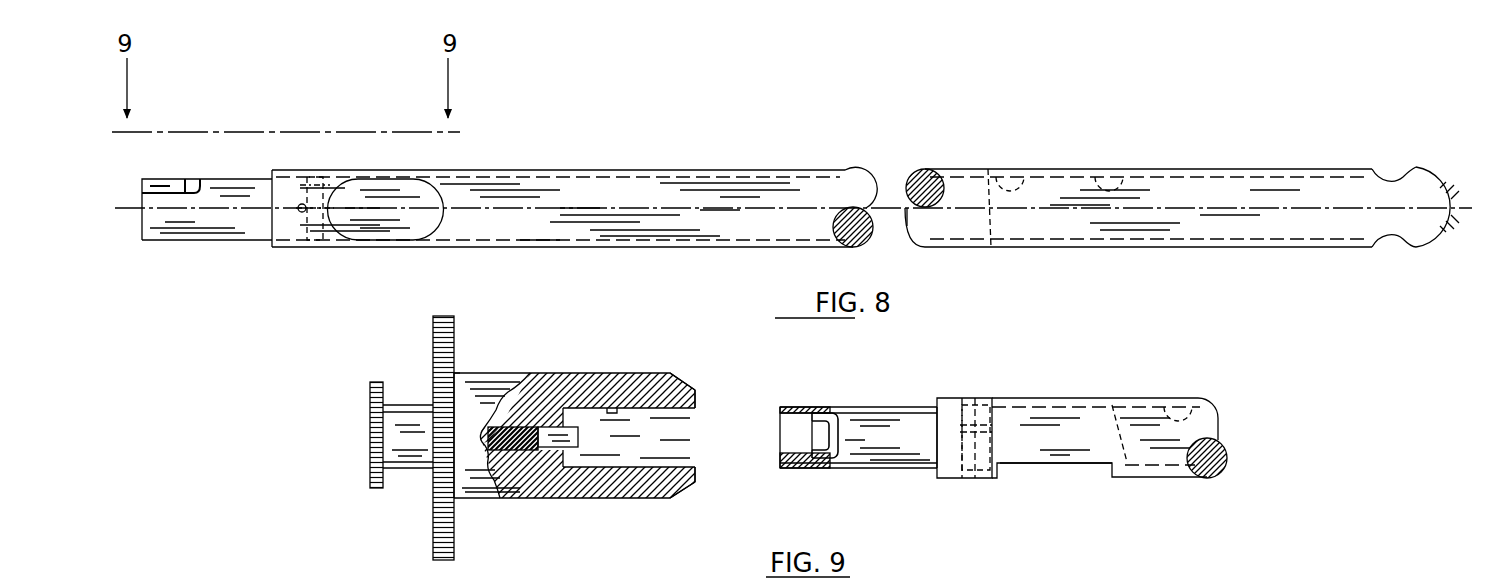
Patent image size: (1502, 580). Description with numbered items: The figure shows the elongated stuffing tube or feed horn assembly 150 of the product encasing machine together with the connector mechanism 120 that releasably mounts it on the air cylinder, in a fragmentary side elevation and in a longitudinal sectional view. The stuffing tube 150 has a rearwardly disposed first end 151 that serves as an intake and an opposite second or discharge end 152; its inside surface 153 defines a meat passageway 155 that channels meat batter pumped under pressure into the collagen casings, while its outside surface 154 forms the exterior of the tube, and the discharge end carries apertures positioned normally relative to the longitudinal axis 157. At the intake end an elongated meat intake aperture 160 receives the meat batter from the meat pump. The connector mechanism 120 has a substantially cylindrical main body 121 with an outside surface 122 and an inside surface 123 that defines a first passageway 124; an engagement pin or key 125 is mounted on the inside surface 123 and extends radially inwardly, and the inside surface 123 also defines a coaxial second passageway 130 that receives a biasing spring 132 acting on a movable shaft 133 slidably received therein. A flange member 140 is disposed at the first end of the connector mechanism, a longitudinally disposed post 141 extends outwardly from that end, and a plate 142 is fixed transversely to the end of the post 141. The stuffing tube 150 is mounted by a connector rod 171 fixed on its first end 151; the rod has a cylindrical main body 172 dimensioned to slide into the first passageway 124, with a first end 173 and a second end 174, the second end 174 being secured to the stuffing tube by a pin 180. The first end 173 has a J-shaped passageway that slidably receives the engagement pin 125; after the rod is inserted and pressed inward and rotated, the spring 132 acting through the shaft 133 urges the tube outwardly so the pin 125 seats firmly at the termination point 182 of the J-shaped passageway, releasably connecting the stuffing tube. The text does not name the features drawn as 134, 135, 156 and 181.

In FIG. 9, the connector mechanism 120 is at (546, 364).
In FIG. 9, the main body 121 is at (586, 373).
In FIG. 9, the outside surface 122 is at (494, 373).
In FIG. 9, the inside surface 123 is at (678, 416).
In FIG. 9, the first passageway 124 is at (629, 437).
In FIG. 9, the engagement pin 125 is at (612, 413).
In FIG. 9, the second passageway 130 is at (540, 451).
In FIG. 9, the biasing spring 132 is at (493, 472).
In FIG. 9, the movable shaft 133 is at (574, 437).
In FIG. 9, the body flange 134 is at (463, 378).
In FIG. 9, the chamfer 135 is at (674, 380).
In FIG. 9, the flange member 140 is at (437, 336).
In FIG. 9, the post 141 is at (412, 456).
In FIG. 9, the plate 142 is at (374, 452).
In FIG. 8, the stuffing tube 150 is at (781, 156).
In FIG. 9, the stuffing tube 150 is at (1220, 394).
In FIG. 8, the first end 151 is at (454, 192).
In FIG. 9, the first end 151 is at (1045, 410).
In FIG. 8, the second end 152 is at (1293, 190).
In FIG. 8, the inside surface 153 is at (1090, 172).
In FIG. 9, the inside surface 153 is at (1166, 405).
In FIG. 8, the outside surface 154 is at (672, 170).
In FIG. 9, the outside surface 154 is at (1118, 398).
In FIG. 8, the meat passageway 155 is at (988, 169).
In FIG. 9, the meat passageway 155 is at (1122, 432).
In FIG. 8, the neck 156 is at (1392, 175).
In FIG. 8, the longitudinal axis 157 is at (1461, 196).
In FIG. 8, the meat intake aperture 160 is at (398, 230).
In FIG. 9, the meat intake aperture 160 is at (1060, 466).
In FIG. 9, the connector rod 171 is at (878, 400).
In FIG. 8, the main body 172 is at (256, 178).
In FIG. 9, the main body 172 is at (853, 422).
In FIG. 8, the first end 173 is at (151, 184).
In FIG. 9, the first end 173 is at (796, 410).
In FIG. 8, the second end 174 is at (315, 176).
In FIG. 9, the second end 174 is at (985, 405).
In FIG. 9, the pin 180 is at (972, 444).
In FIG. 8, the hook 181 is at (194, 188).
In FIG. 9, the hook 181 is at (828, 458).
In FIG. 9, the termination point 182 is at (812, 424).